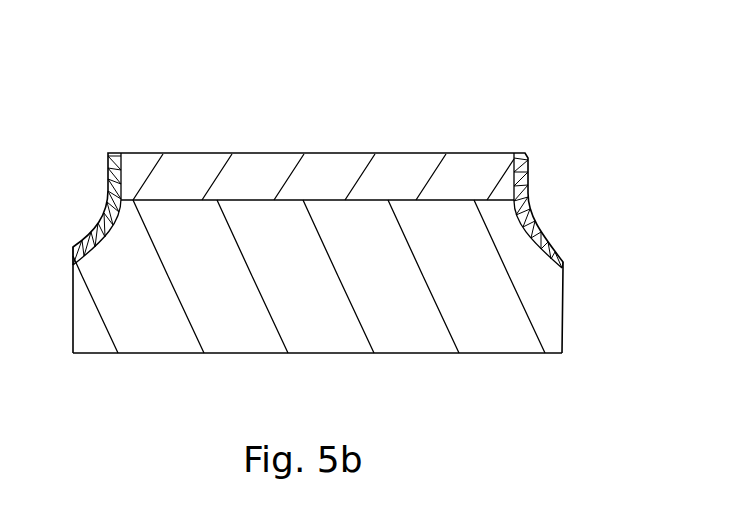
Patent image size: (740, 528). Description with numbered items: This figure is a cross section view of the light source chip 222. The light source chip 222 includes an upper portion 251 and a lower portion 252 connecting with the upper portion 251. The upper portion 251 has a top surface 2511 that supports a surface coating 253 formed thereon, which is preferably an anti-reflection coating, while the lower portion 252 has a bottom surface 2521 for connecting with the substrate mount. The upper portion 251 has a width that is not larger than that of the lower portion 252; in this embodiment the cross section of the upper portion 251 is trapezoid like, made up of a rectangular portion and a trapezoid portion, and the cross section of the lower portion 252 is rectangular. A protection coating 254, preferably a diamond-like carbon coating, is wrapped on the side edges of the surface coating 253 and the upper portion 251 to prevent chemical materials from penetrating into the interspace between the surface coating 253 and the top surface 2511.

The light source chip 222 is at (103, 44).
The surface coating 253 is at (480, 178).
The top surface 2511 is at (500, 200).
The upper portion 251 is at (505, 227).
The lower portion 252 is at (538, 322).
The bottom surface 2521 is at (527, 355).
The protection coating 254 is at (557, 253).